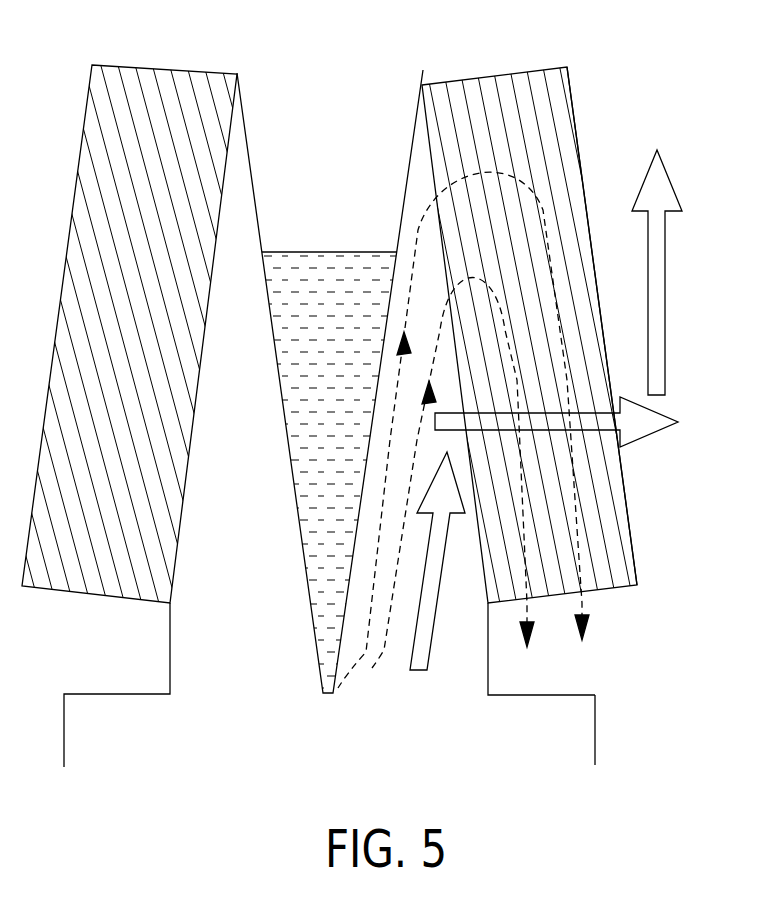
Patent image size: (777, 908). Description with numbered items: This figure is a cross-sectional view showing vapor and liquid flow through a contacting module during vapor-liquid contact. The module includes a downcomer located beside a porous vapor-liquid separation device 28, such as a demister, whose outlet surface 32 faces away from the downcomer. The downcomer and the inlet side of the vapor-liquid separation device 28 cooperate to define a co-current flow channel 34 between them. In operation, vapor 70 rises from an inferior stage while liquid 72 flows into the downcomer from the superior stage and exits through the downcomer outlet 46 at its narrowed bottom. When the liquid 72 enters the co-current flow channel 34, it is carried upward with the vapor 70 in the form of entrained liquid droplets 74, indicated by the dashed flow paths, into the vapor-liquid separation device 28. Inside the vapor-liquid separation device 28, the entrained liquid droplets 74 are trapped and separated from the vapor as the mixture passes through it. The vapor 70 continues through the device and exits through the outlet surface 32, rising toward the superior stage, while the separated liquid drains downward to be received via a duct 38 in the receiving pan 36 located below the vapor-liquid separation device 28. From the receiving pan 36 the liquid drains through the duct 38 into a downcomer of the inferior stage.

The vapor-liquid separation device 28 is at (500, 88).
The outlet surface 32 is at (625, 497).
The co-current flow channel 34 is at (253, 592).
The receiving pan 36 is at (563, 693).
The duct 38 is at (596, 731).
The downcomer outlet 46 is at (335, 695).
The vapor 70 is at (657, 271).
The liquid 72 is at (345, 332).
The entrained liquid droplets 74 is at (371, 660).